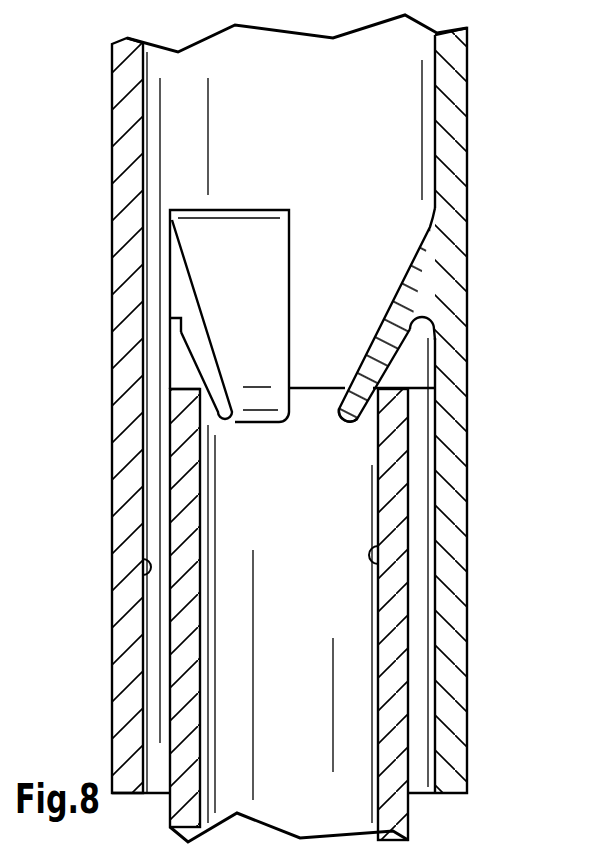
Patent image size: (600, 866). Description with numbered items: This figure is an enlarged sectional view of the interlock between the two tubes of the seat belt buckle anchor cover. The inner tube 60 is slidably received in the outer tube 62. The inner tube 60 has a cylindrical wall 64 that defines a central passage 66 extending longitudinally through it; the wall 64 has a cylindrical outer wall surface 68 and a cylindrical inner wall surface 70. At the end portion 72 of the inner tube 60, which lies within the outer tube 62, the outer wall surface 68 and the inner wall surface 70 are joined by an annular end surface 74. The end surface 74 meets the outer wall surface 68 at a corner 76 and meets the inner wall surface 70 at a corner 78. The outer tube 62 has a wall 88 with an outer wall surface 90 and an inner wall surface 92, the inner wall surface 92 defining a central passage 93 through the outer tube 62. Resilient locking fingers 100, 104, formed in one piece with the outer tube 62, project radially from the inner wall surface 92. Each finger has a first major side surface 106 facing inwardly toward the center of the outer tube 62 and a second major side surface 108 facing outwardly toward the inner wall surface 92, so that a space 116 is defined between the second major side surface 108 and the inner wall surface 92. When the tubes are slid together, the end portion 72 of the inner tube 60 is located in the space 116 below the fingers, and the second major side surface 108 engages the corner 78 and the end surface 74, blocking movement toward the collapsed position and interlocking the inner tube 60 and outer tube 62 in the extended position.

The inner tube 60 is at (420, 683).
The outer tube 62 is at (104, 695).
The cylindrical wall 64 is at (395, 652).
The central passage 66 is at (308, 723).
The cylindrical outer wall surface 68 is at (413, 580).
The cylindrical inner wall surface 70 is at (377, 538).
The end portion 72 is at (400, 418).
The annular end surface 74 is at (200, 388).
The corner 76 is at (400, 387).
The corner 78 is at (197, 372).
The wall 88 is at (130, 647).
The outer wall surface 90 is at (113, 598).
The inner wall surface 92 is at (143, 565).
The central passage 93 is at (153, 493).
The locking finger 100 is at (360, 412).
The locking finger 104 is at (228, 412).
The first major side surface 106 is at (373, 335).
The second major side surface 108 is at (173, 331).
The space 116 is at (415, 357).